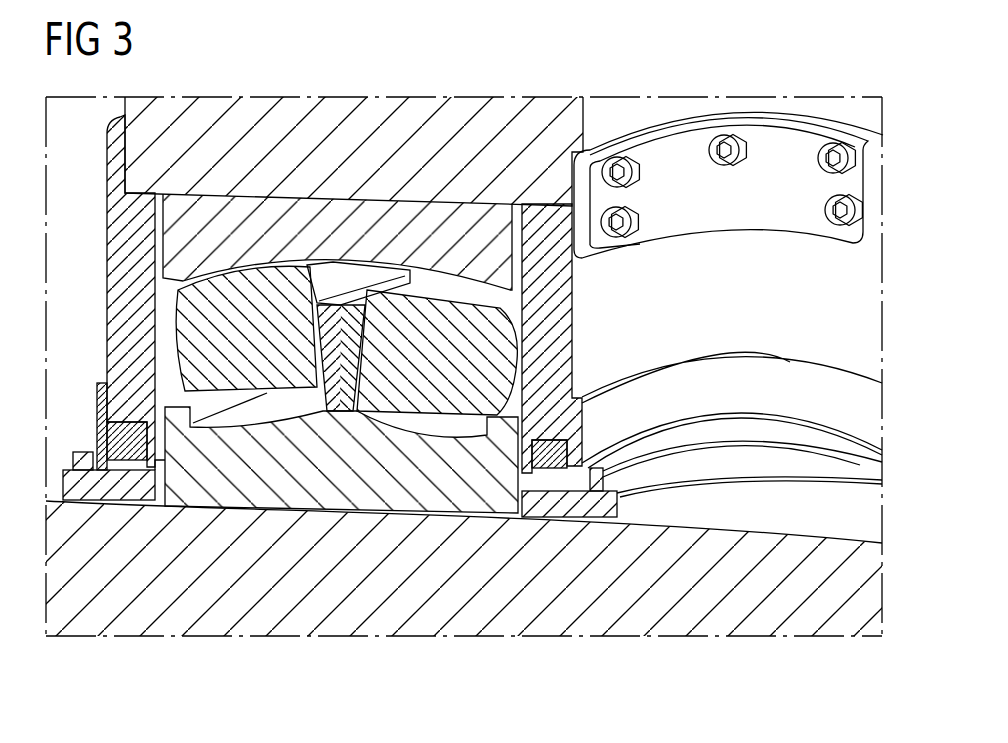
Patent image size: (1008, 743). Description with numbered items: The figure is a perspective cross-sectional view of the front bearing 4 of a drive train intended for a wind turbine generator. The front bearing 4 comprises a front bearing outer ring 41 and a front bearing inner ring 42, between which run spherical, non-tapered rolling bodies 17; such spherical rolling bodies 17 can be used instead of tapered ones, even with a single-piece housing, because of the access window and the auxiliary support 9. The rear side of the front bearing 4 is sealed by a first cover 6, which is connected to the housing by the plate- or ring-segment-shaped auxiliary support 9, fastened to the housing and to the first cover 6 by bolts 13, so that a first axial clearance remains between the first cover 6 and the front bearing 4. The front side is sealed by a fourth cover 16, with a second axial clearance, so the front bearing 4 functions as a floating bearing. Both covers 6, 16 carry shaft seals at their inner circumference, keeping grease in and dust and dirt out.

The front bearing 4 is at (464, 591).
The front bearing outer ring 41 is at (354, 133).
The front bearing inner ring 42 is at (464, 591).
The first cover 6 is at (569, 360).
The auxiliary support 9 is at (728, 156).
The bolts 13 is at (731, 186).
The fourth cover 16 is at (106, 307).
The rolling bodies 17 is at (341, 340).